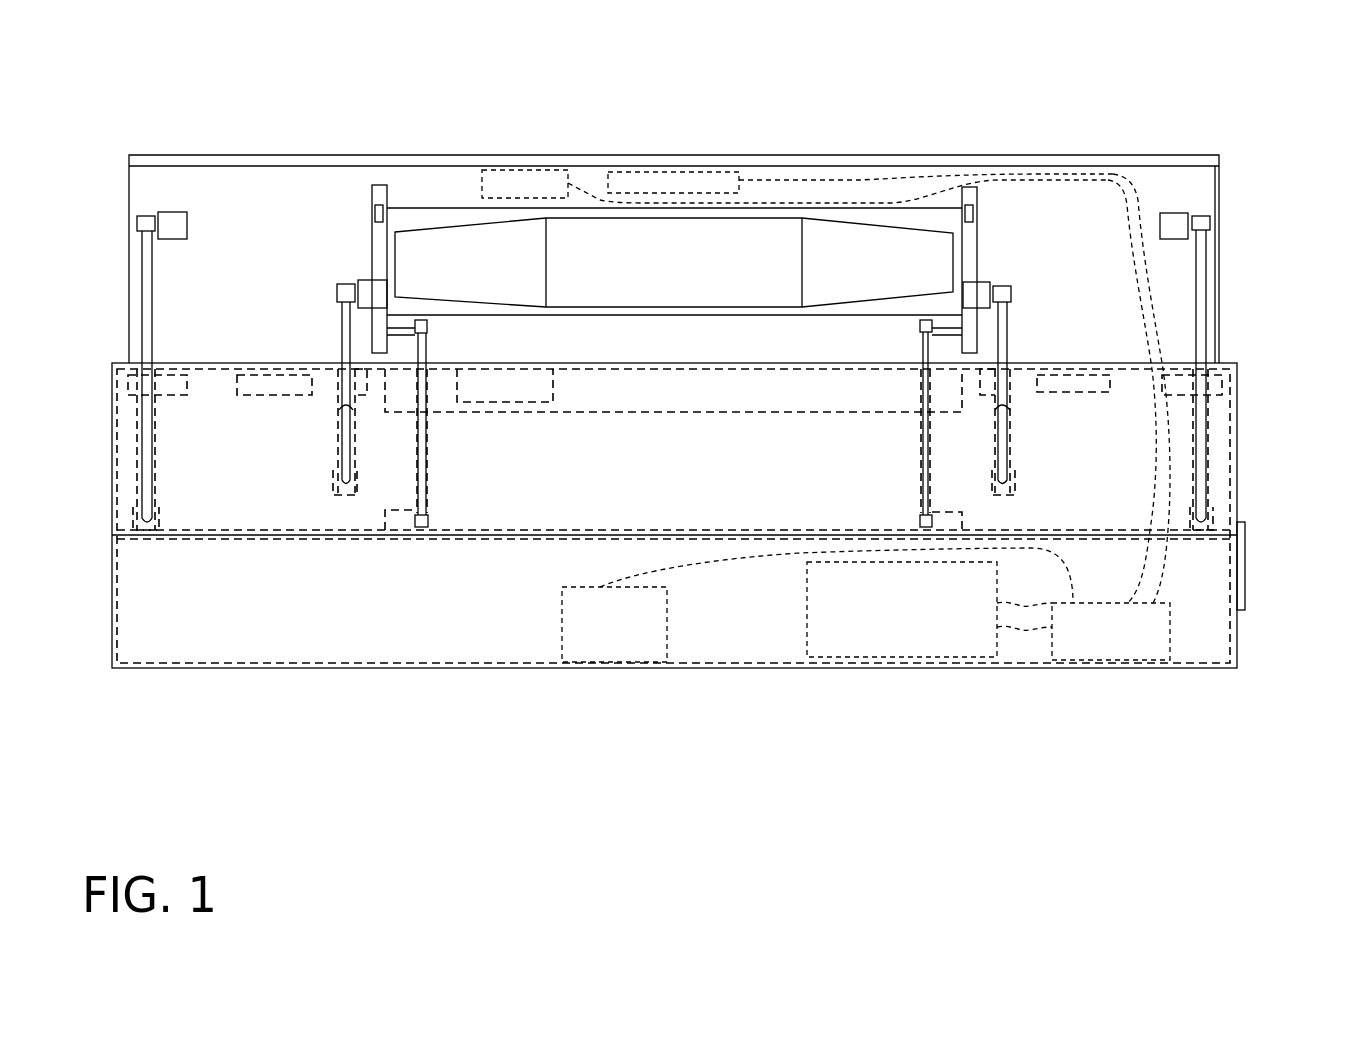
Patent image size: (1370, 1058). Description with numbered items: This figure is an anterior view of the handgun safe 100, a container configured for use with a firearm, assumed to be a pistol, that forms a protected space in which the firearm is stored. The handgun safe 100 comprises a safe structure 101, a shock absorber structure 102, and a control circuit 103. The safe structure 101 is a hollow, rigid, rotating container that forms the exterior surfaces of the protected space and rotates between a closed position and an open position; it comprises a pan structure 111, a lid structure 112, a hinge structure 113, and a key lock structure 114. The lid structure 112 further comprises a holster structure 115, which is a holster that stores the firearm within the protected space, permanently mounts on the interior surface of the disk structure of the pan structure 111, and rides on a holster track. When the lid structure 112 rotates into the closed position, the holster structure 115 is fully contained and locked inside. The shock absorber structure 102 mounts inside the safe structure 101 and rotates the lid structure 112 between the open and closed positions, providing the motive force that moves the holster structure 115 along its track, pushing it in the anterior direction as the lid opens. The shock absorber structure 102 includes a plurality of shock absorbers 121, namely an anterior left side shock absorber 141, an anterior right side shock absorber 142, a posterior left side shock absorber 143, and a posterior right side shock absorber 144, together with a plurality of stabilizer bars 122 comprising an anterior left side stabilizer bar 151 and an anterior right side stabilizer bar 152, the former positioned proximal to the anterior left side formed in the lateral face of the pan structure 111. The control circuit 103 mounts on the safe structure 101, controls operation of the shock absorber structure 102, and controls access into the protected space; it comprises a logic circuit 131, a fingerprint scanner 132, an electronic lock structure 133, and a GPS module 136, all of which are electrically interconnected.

The handgun safe 100 is at (737, 474).
The safe structure 101 is at (737, 456).
The shock absorber structure 102 is at (742, 368).
The control circuit 103 is at (908, 340).
The pan structure 111 is at (1237, 455).
The lid structure 112 is at (1205, 162).
The hinge structure 113 is at (293, 377).
The key lock structure 114 is at (678, 876).
The holster structure 115 is at (888, 253).
The plurality of shock absorbers 121 is at (742, 368).
The plurality of stabilizer bars 122 is at (673, 425).
The logic circuit 131 is at (1152, 627).
The fingerprint scanner 132 is at (643, 182).
The electronic lock structure 133 is at (482, 183).
The GPS module 136 is at (652, 613).
The anterior left side shock absorber 141 is at (1203, 294).
The anterior right side shock absorber 142 is at (152, 290).
The posterior left side shock absorber 143 is at (1007, 330).
The posterior right side shock absorber 144 is at (337, 435).
The anterior left side stabilizer bar 151 is at (923, 440).
The anterior right side stabilizer bar 152 is at (428, 462).